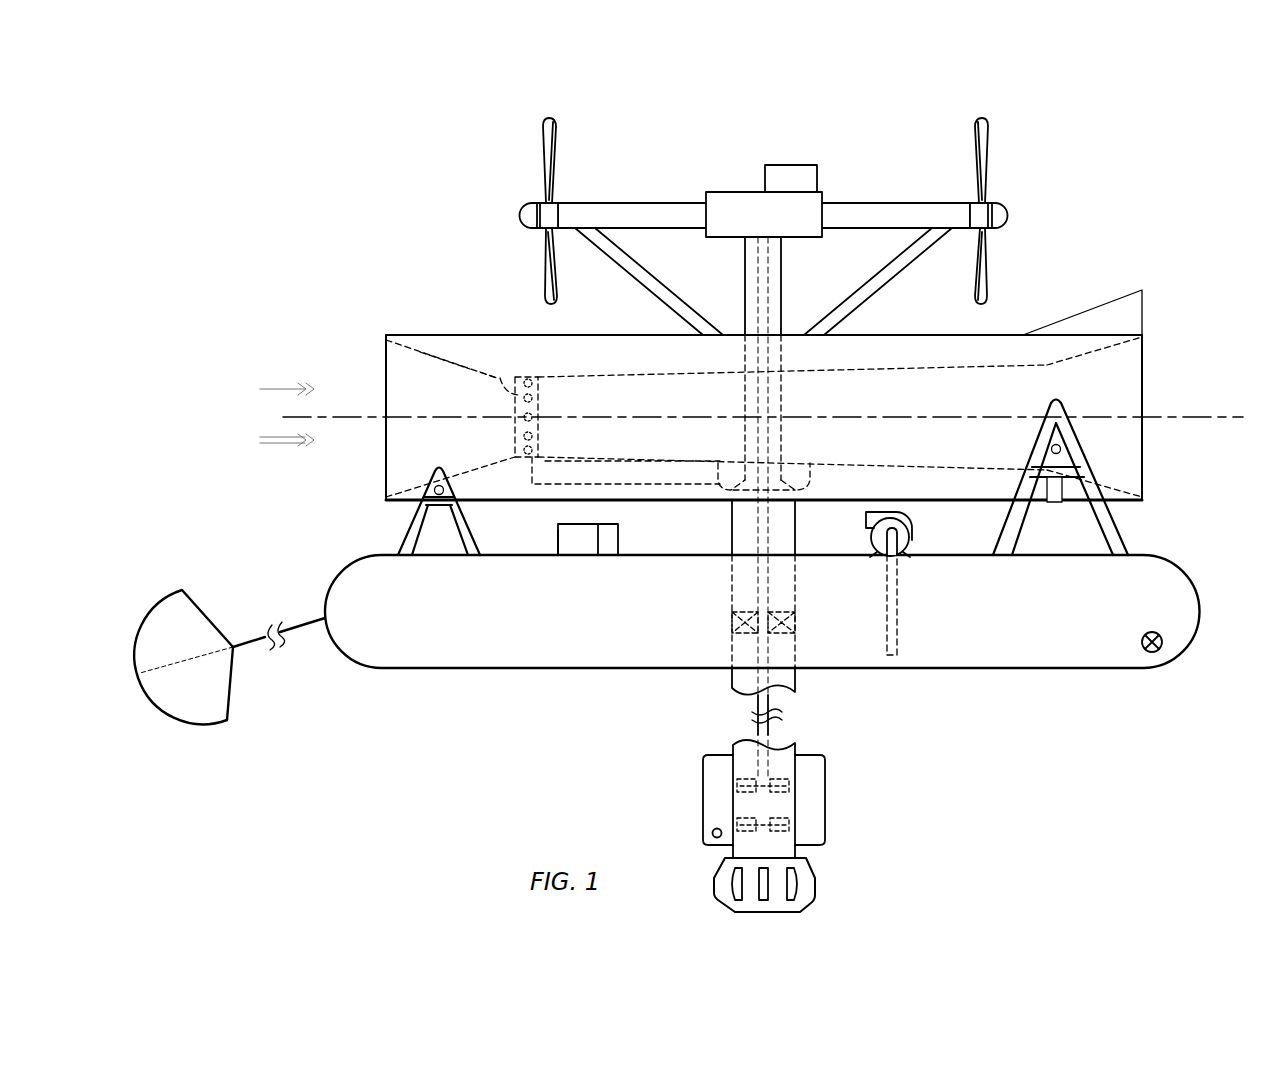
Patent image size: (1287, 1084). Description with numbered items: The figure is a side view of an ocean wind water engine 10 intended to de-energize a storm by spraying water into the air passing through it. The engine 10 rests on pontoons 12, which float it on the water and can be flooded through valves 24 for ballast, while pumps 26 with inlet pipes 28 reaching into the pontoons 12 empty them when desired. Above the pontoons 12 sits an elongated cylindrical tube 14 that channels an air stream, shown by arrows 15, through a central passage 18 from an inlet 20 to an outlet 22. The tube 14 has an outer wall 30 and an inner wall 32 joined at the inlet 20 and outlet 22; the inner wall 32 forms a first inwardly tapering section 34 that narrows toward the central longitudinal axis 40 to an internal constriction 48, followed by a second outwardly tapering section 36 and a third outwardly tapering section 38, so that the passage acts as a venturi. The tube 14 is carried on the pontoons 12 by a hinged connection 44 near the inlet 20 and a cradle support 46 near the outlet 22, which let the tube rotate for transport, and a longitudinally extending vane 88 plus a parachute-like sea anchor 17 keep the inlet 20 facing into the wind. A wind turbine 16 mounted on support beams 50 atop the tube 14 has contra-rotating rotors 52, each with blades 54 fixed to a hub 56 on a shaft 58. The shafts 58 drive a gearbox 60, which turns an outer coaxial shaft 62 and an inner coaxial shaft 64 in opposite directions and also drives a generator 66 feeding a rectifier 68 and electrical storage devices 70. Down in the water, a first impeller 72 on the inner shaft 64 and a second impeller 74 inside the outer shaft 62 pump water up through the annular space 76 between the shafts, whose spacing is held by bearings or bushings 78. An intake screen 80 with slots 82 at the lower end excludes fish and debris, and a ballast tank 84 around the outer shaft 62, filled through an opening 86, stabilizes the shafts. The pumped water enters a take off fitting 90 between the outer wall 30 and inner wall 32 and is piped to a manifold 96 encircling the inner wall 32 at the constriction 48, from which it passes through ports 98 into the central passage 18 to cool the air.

The engine 10 is at (306, 176).
The pontoons 12 is at (604, 669).
The elongated cylindrical tube 14 is at (908, 333).
The arrows 15 is at (276, 389).
The wind turbine 16 is at (480, 163).
The sea anchor 17 is at (196, 723).
The central passage 18 is at (835, 402).
The inlet 20 is at (385, 450).
The outlet 22 is at (1144, 437).
The valves 24 is at (1154, 653).
The pumps 26 is at (912, 526).
The inlet pipes 28 is at (898, 606).
The outer wall 30 is at (422, 333).
The inner wall 32 is at (454, 336).
The first inwardly tapering section 34 is at (462, 468).
The second outwardly tapering section 36 is at (672, 460).
The third outwardly tapering section 38 is at (1087, 362).
The central longitudinal axis 40 is at (1220, 415).
The hinged connection 44 is at (441, 506).
The cradle support 46 is at (1054, 503).
The internal constriction 48 is at (497, 378).
The support beams 50 is at (660, 272).
The rotors 52 is at (522, 213).
The blades 54 is at (541, 128).
The hub 56 is at (520, 222).
The shafts 58 is at (628, 202).
The gearbox 60 is at (736, 191).
The outer coaxial shaft 62 is at (744, 283).
The inner coaxial shaft 64 is at (768, 280).
The generator 66 is at (795, 164).
The rectifier 68 is at (620, 534).
The electrical storage devices 70 is at (556, 546).
The first impeller 72 is at (735, 801).
The second impeller 74 is at (790, 810).
The annular space 76 is at (776, 692).
The bearings or bushings 78 is at (742, 626).
The intake screen 80 is at (716, 882).
The openings or slots 82 is at (808, 882).
The ballast tank 84 is at (703, 775).
The valve or opening 86 is at (712, 833).
The vanes 88 is at (1144, 312).
The take off fitting 90 is at (790, 485).
The manifold 96 is at (522, 376).
The holes or ports 98 is at (540, 410).